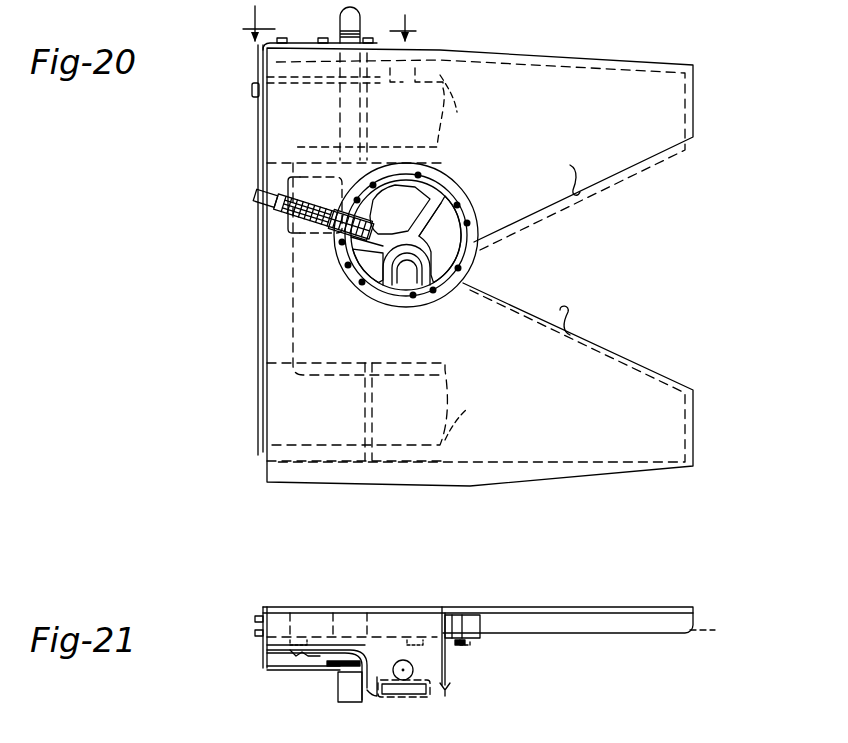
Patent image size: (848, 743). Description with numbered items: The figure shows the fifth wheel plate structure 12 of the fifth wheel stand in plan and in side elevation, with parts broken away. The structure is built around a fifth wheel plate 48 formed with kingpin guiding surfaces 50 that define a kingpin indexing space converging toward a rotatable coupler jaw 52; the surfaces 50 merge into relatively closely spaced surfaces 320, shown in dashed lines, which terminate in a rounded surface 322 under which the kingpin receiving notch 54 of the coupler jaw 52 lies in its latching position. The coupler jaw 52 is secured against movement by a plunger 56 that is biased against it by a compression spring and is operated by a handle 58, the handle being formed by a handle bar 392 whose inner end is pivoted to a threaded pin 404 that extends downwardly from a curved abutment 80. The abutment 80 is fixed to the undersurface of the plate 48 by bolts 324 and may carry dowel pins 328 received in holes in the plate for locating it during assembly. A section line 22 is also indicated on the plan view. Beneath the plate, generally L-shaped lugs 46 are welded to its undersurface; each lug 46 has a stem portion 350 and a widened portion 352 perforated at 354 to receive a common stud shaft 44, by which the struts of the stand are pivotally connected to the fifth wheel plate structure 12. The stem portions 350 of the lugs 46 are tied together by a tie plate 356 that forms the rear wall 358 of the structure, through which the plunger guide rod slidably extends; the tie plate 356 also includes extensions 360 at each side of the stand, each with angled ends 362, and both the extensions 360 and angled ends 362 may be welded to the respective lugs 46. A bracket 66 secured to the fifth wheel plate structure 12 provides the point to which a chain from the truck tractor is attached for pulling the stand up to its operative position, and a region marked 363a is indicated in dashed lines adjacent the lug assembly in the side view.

In FIG. 20, the fifth wheel plate structure 12 is at (258, 321).
In FIG. 21, the fifth wheel plate structure 12 is at (540, 606).
In FIG. 20, the section line 22 is at (330, 23).
In FIG. 21, the stud shaft 44 is at (403, 680).
In FIG. 20, the lug 46 is at (461, 257).
In FIG. 21, the lug 46 is at (443, 657).
In FIG. 20, the fifth wheel plate 48 is at (672, 102).
In FIG. 21, the fifth wheel plate 48 is at (582, 612).
In FIG. 20, the kingpin guiding surface 50 is at (556, 254).
In FIG. 20, the coupler jaw 52 is at (452, 192).
In FIG. 20, the kingpin receiving notch 54 is at (393, 280).
In FIG. 20, the plunger 56 is at (320, 228).
In FIG. 20, the handle 58 is at (350, 23).
In FIG. 21, the bracket 66 is at (445, 692).
In FIG. 20, the curved abutment 80 is at (430, 303).
In FIG. 20, the closely spaced surfaces 320 is at (470, 252).
In FIG. 20, the rounded surface 322 is at (410, 285).
In FIG. 20, the bolt 324 is at (460, 205).
In FIG. 20, the dowel pin 328 is at (469, 223).
In FIG. 21, the stem portion 350 is at (313, 628).
In FIG. 21, the widened portion 352 is at (445, 683).
In FIG. 21, the perforation 354 is at (377, 695).
In FIG. 20, the tie plate 356 is at (260, 354).
In FIG. 21, the tie plate 356 is at (284, 655).
In FIG. 20, the rear wall 358 is at (262, 384).
In FIG. 21, the rear wall 358 is at (262, 645).
In FIG. 21, the extension 360 is at (318, 650).
In FIG. 21, the angled end 362 is at (350, 678).
In FIG. 21, the slot 363a is at (410, 698).
In FIG. 21, the handle bar 392 is at (353, 702).
In FIG. 20, the threaded pin 404 is at (349, 266).